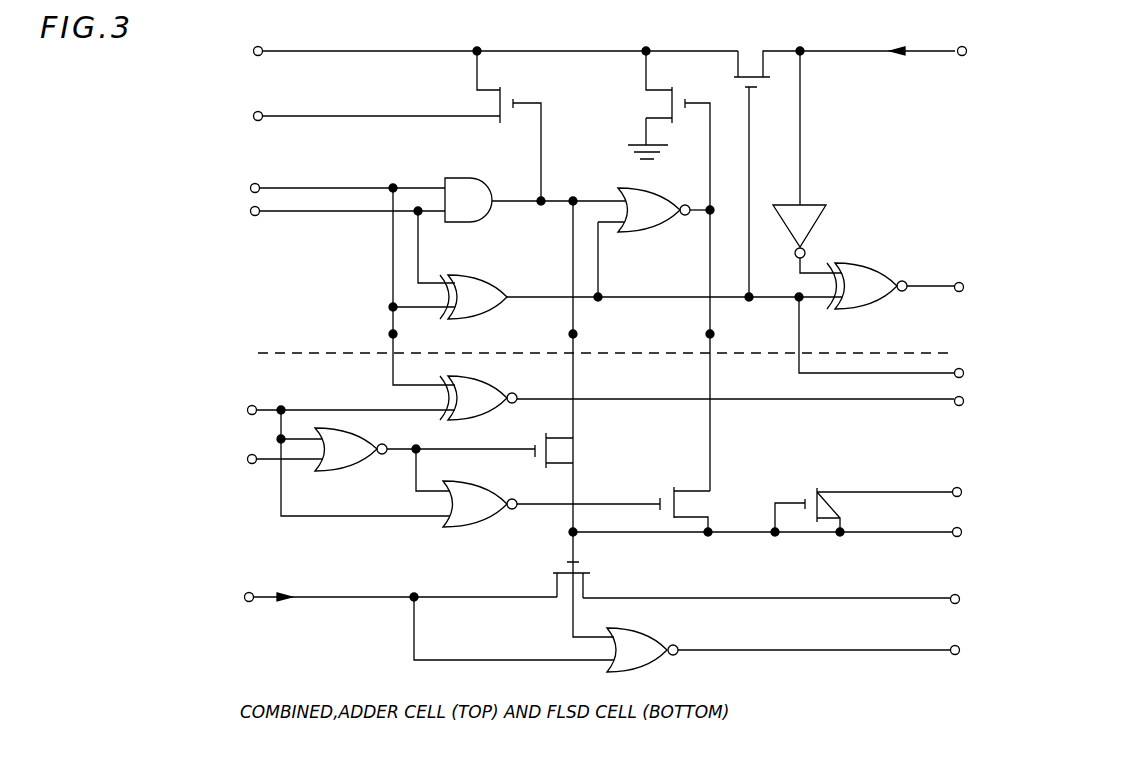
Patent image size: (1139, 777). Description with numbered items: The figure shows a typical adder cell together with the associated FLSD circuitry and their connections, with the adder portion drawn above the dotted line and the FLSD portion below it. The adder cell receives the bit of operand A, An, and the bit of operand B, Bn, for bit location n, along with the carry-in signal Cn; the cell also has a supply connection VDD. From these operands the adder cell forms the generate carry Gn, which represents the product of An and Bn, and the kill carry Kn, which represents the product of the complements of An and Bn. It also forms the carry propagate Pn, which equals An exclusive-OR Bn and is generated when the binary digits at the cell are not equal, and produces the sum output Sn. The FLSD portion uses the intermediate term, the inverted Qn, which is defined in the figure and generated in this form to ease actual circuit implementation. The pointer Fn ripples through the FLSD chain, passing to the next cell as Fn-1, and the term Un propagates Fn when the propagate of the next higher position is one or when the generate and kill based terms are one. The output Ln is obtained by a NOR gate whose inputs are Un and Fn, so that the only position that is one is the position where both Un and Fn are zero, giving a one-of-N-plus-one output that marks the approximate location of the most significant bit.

The supply voltage V_DD VDD is at (348, 109).
The bit of operand A An is at (331, 281).
The bit of operand B Bn is at (331, 242).
The carry-in signal Cn is at (896, 120).
The generate carry Gn is at (558, 417).
The kill carry Kn is at (714, 275).
The sum output S_n Sn is at (910, 286).
The carry propagate Pn is at (895, 341).
The intermediate term Qn is at (994, 394).
The FLSD propagate term Un is at (783, 534).
The pointer term Fn is at (410, 623).
The F_n-1 output Fn-1 is at (795, 594).
The FLSD output Ln is at (1090, 638).